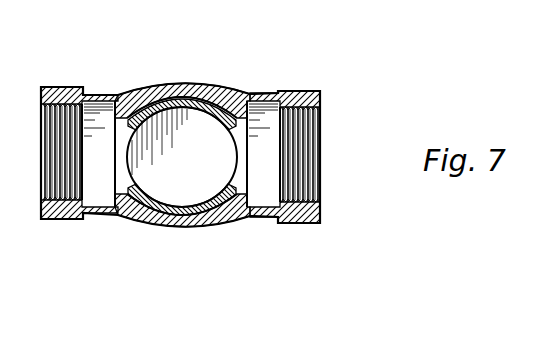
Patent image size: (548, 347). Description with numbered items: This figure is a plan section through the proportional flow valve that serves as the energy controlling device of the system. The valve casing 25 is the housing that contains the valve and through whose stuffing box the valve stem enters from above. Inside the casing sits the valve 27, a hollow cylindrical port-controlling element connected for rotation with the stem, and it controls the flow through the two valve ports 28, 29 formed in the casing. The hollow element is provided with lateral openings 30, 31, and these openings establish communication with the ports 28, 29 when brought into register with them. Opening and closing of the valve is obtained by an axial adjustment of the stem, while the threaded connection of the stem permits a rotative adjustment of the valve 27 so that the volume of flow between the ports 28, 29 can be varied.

The valve casing 25 is at (236, 205).
The valve 27 is at (192, 97).
The valve port 28 is at (120, 203).
The valve port 29 is at (240, 167).
The lateral opening 30 is at (231, 121).
The lateral opening 31 is at (128, 120).